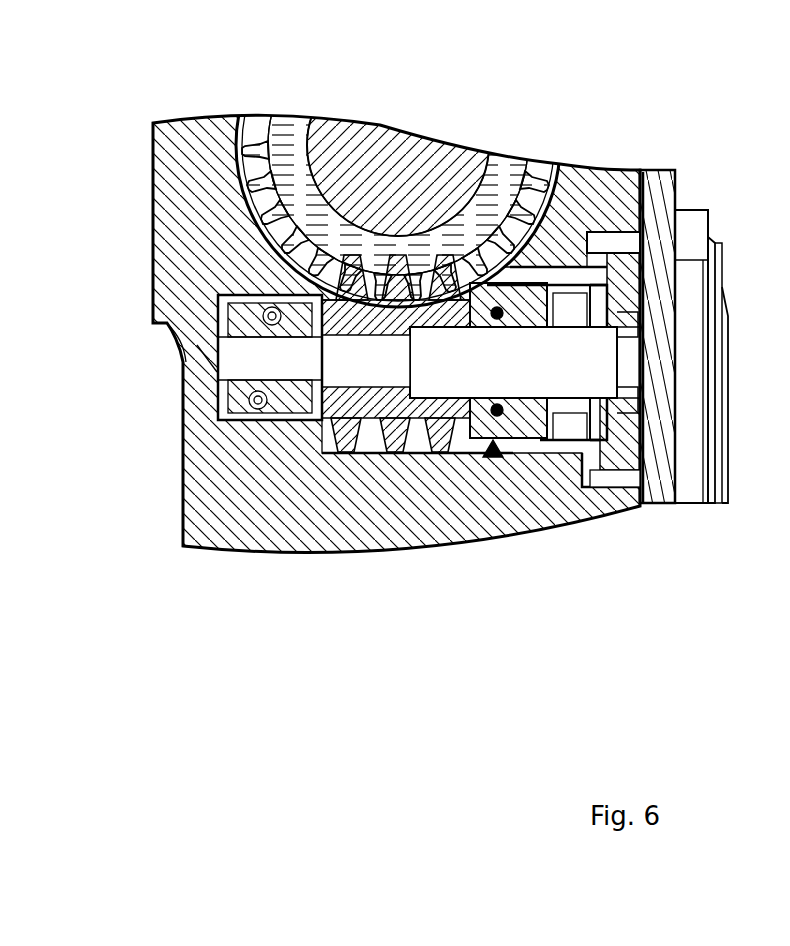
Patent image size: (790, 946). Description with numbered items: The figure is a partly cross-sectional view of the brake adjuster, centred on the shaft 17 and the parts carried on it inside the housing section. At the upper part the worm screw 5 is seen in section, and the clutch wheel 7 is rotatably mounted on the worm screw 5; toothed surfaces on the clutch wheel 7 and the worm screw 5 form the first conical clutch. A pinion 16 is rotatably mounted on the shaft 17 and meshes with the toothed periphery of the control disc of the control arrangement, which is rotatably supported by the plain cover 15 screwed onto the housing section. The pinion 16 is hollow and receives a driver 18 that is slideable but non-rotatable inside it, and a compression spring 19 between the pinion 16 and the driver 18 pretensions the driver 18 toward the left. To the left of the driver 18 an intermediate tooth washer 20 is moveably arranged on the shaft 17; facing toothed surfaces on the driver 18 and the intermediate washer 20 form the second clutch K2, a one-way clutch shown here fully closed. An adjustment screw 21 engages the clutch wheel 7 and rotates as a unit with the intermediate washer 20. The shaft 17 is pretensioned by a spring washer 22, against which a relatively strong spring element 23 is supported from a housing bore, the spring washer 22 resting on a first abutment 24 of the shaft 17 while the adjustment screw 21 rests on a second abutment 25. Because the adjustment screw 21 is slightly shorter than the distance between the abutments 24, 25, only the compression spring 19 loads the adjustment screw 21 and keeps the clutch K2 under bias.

The worm screw 5 is at (382, 160).
The clutch wheel 7 is at (495, 180).
The plain cover 15 is at (663, 190).
The pinion 16 is at (615, 442).
The shaft 17 is at (372, 465).
The driver 18 is at (532, 440).
The compression spring 19 is at (573, 445).
The intermediate tooth washer 20 is at (408, 440).
The adjustment screw 21 is at (322, 452).
The spring washer 22 is at (300, 347).
The spring element 23 is at (265, 312).
The first abutment 24 is at (305, 420).
The second abutment 25 is at (398, 447).
The second clutch K2 is at (493, 460).